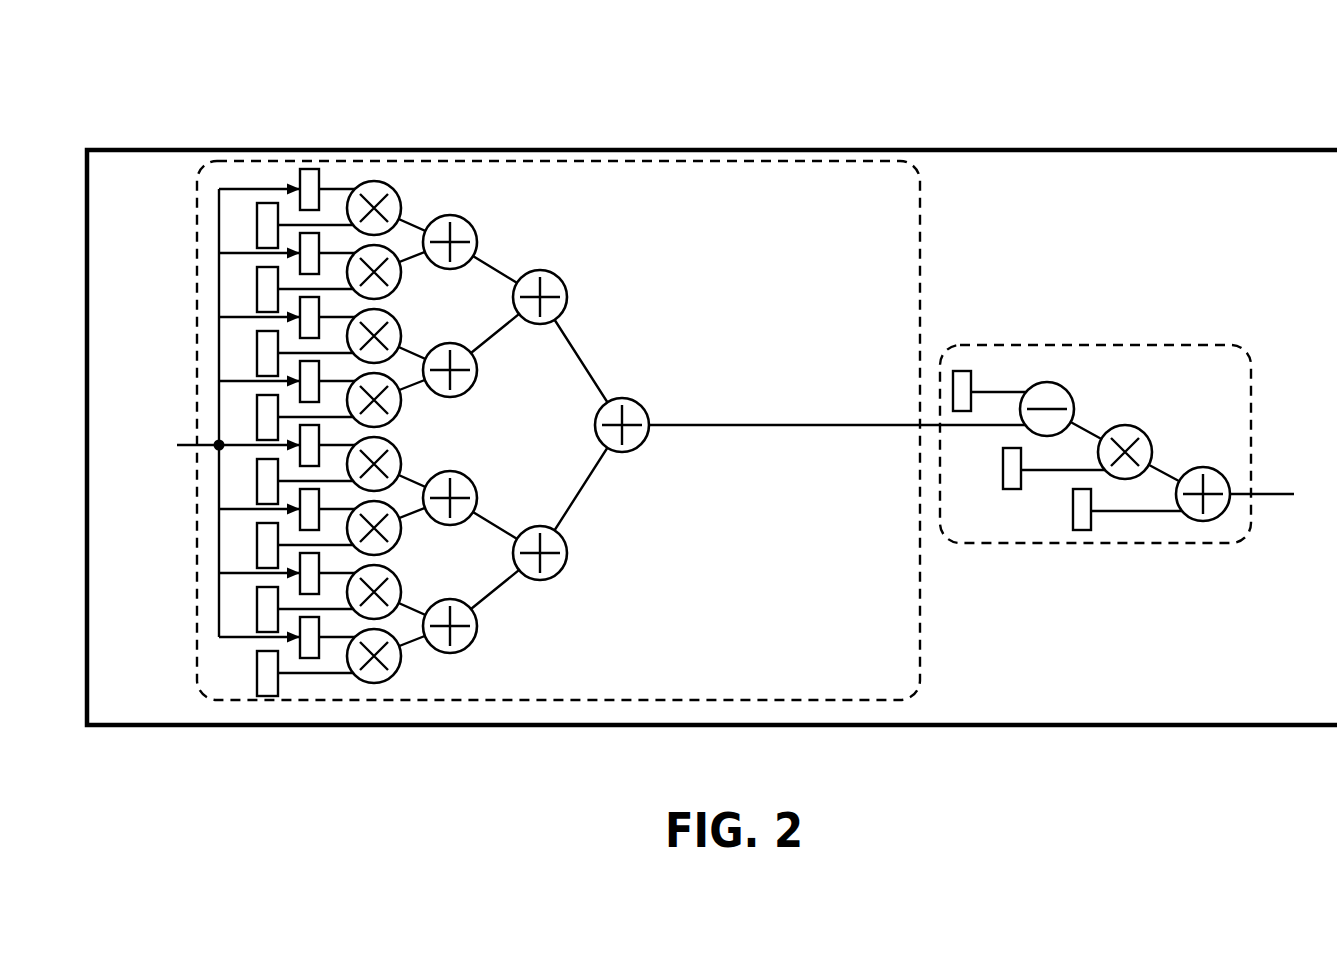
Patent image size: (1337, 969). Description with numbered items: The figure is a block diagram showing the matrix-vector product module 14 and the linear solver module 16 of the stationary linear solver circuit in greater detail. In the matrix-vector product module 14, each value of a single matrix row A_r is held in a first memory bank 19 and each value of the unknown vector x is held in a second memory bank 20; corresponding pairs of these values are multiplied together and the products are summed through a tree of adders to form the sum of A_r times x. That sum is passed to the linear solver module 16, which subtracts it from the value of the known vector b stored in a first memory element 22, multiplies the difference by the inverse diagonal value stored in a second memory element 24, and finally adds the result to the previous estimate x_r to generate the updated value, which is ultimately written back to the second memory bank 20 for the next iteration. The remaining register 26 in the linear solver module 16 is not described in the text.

The matrix-vector product module 14 is at (612, 380).
The linear solver module 16 is at (1117, 374).
The first memory bank 19 is at (235, 140).
The second memory bank 20 is at (338, 140).
The first memory element 22 is at (962, 378).
The second memory element 24 is at (1011, 482).
The bias register 26 is at (1080, 520).